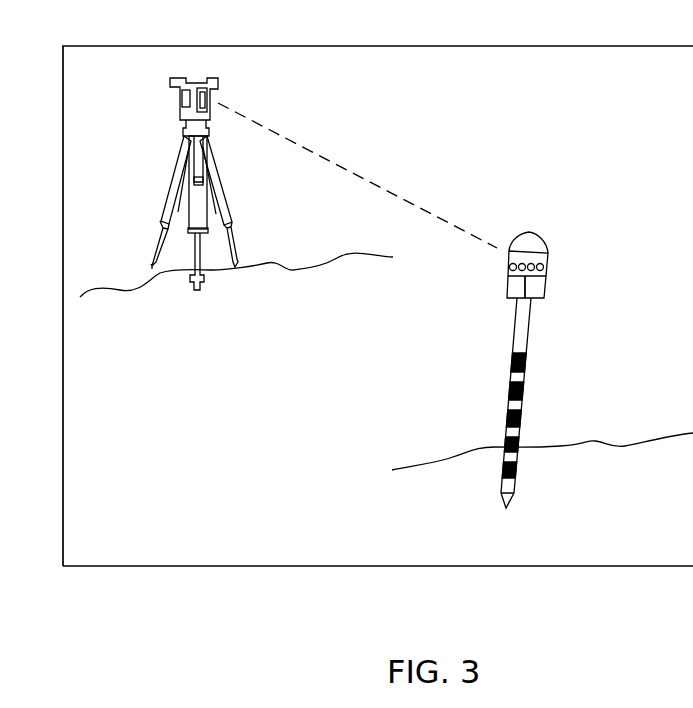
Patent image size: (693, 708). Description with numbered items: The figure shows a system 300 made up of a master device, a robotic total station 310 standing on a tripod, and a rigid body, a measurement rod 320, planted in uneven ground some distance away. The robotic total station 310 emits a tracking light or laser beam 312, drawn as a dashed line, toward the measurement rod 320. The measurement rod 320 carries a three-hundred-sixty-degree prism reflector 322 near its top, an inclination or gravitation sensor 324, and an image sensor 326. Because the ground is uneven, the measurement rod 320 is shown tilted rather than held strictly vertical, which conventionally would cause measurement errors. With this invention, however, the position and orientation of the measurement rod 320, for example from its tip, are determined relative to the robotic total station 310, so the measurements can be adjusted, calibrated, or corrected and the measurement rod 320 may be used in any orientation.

The system 300 is at (452, 642).
The robotic total station 310 is at (178, 87).
The tracking light or laser beam 312 is at (357, 175).
The measurement rod 320 is at (533, 354).
The 360-degree prism reflector 322 is at (545, 260).
The inclination or gravitation sensor 324 is at (542, 291).
The image sensor 326 is at (508, 287).